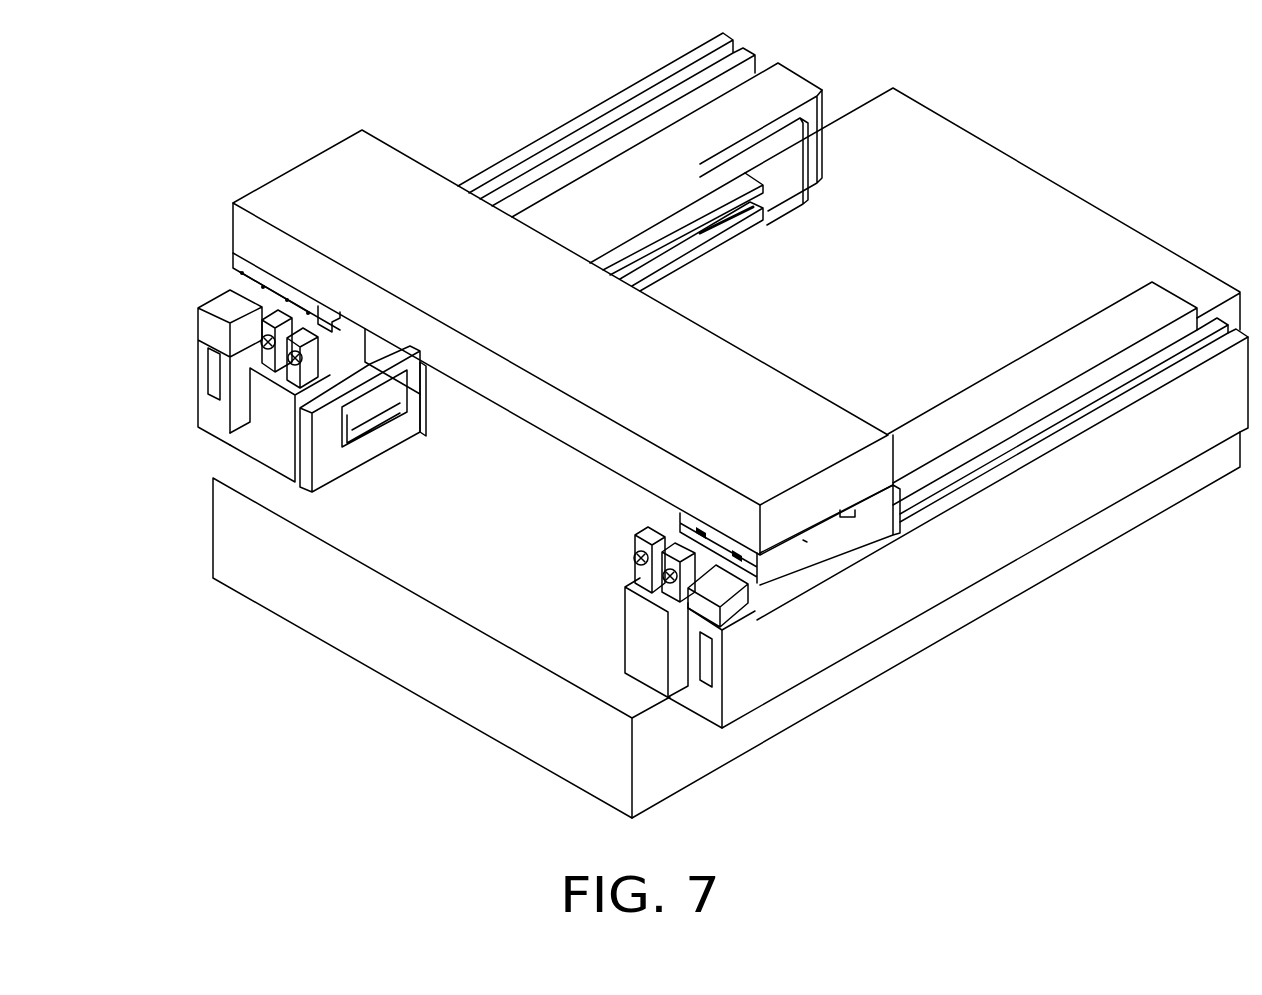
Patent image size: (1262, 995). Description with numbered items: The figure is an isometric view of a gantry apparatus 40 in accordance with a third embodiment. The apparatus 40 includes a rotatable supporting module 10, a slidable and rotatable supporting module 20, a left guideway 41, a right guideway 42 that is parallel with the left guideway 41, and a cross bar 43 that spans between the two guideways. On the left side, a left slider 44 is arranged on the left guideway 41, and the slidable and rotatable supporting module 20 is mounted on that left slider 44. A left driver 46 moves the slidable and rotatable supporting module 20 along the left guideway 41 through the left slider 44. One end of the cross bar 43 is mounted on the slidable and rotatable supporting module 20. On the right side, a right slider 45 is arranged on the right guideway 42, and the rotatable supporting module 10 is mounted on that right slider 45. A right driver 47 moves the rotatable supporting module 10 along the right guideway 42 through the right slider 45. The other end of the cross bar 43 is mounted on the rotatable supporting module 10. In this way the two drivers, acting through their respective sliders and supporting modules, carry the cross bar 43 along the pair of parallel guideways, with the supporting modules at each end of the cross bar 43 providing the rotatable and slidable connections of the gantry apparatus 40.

The gantry apparatus 40 is at (547, 55).
The cross bar 43 is at (335, 195).
The slidable and rotatable supporting module 20 is at (243, 263).
The left slider 44 is at (243, 285).
The left driver 46 is at (225, 302).
The left guideway 41 is at (275, 440).
The right slider 45 is at (743, 573).
The rotatable supporting module 10 is at (767, 567).
The right driver 47 is at (723, 595).
The right guideway 42 is at (707, 697).